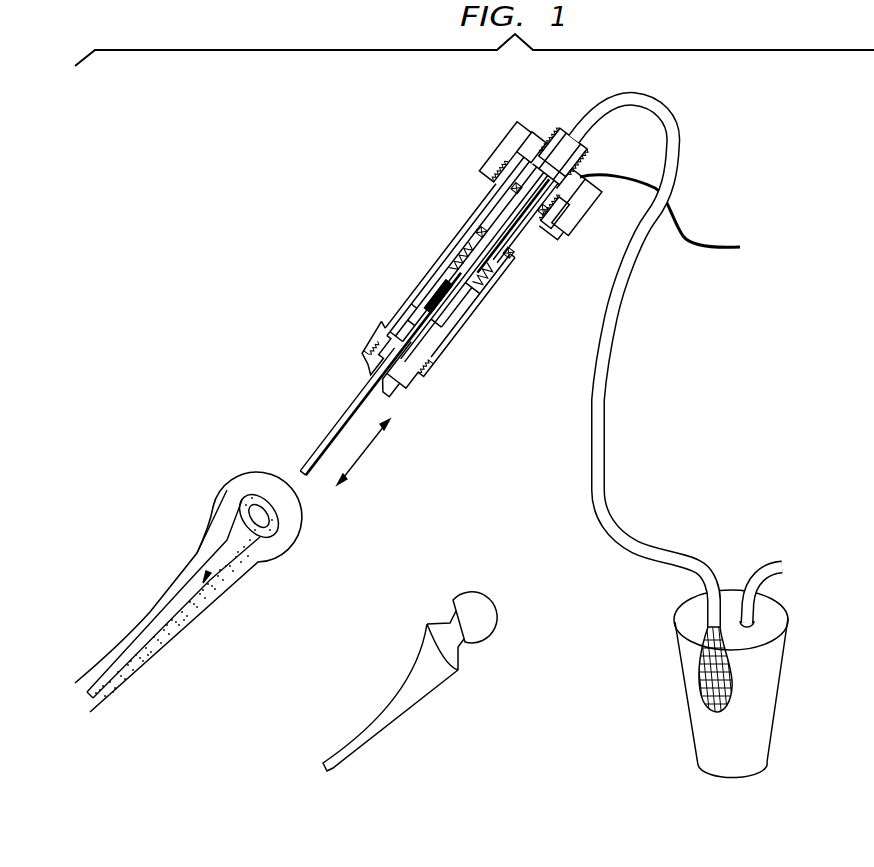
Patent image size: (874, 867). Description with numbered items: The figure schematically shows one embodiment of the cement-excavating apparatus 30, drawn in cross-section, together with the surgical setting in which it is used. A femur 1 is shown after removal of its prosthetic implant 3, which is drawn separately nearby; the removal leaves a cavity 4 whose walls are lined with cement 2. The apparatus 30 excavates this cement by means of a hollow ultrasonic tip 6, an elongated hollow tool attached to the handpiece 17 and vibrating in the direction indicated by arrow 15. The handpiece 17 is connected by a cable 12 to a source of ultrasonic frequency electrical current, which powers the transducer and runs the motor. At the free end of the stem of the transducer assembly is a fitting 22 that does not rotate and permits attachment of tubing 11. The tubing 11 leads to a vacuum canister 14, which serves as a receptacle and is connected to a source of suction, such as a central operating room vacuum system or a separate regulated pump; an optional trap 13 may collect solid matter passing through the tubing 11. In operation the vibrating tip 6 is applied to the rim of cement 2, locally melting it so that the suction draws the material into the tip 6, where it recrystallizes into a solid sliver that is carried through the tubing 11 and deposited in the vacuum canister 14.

The femur 1 is at (150, 613).
The cement 2 is at (213, 550).
The prosthetic implant 3 is at (427, 624).
The cavity 4 is at (240, 543).
The hollow ultrasonic tip 6 is at (336, 434).
The tubing 11 is at (605, 395).
The cable 12 is at (693, 242).
The trap 13 is at (700, 692).
The vacuum canister 14 is at (723, 757).
The arrow 15 is at (368, 450).
The handpiece 17 is at (526, 97).
The fitting 22 is at (557, 150).
The apparatus 30 is at (492, 298).